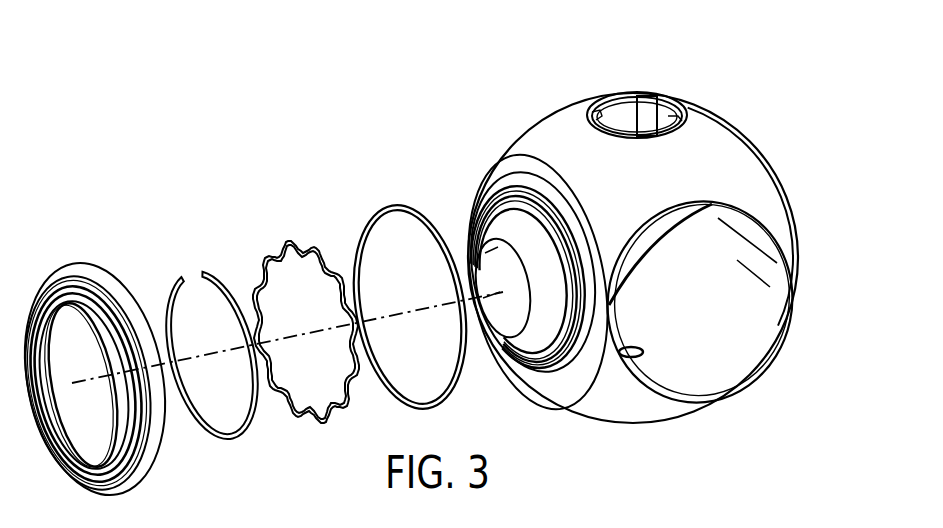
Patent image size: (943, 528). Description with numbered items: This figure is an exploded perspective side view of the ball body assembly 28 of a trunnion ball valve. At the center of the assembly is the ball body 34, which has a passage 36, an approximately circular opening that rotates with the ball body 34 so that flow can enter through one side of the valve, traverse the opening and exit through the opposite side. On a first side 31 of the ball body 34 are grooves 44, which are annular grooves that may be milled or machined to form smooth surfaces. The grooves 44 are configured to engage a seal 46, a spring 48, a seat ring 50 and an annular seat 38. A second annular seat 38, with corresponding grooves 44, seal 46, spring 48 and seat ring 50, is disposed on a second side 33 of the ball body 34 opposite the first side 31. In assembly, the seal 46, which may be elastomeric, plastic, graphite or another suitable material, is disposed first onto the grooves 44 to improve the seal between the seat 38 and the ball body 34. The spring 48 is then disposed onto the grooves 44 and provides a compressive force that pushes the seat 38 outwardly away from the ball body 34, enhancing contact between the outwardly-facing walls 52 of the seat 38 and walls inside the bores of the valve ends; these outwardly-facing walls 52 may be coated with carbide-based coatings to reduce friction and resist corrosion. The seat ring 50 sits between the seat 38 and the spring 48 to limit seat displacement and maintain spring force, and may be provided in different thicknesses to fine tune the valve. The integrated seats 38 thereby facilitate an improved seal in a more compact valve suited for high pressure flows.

The ball body assembly 28 is at (315, 106).
The first side 31 is at (490, 108).
The second side 33 is at (768, 108).
The ball body 34 is at (565, 103).
The passage 36 is at (686, 289).
The annular seat 38 is at (66, 266).
The grooves 44 is at (512, 172).
The seal 46 is at (380, 206).
The spring 48 is at (277, 241).
The seat ring 50 is at (180, 273).
The outwardly-facing walls 52 is at (148, 460).